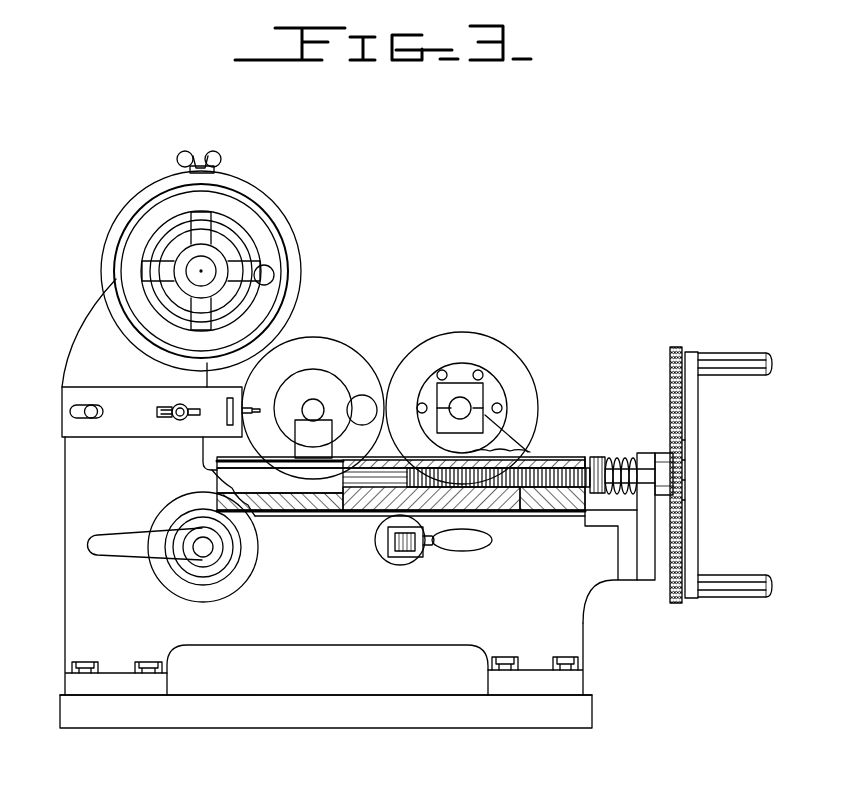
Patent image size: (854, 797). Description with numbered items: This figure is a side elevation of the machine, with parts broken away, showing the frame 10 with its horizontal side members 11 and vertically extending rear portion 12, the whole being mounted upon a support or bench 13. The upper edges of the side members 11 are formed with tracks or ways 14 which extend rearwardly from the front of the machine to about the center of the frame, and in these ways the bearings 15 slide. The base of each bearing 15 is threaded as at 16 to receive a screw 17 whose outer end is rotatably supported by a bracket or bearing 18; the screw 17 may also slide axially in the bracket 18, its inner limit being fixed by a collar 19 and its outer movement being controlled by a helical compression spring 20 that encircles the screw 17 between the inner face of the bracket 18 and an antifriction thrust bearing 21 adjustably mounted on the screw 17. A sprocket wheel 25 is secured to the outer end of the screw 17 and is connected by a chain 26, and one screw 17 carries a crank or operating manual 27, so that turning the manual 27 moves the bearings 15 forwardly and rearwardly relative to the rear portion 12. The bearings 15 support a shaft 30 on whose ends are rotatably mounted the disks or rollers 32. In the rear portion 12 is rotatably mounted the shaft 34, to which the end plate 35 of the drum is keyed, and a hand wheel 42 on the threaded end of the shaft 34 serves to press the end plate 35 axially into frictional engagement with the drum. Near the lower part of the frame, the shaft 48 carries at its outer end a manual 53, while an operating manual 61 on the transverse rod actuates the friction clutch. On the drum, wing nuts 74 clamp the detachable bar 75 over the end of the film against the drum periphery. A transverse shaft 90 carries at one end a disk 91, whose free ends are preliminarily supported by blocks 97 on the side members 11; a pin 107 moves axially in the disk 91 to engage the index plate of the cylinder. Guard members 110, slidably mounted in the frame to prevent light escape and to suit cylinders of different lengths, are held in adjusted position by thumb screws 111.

The frame 10 is at (592, 643).
The side members 11 is at (427, 640).
The rear portion 12 is at (77, 358).
The support or bench 13 is at (372, 729).
The tracks or ways 14 is at (327, 486).
The bearings 15 is at (505, 437).
The threaded base 16 is at (528, 455).
The screws 17 is at (523, 512).
The brackets or bearings 18 is at (643, 454).
The collar 19 is at (659, 453).
The helical compression spring 20 is at (620, 457).
The antifriction thrust bearing 21 is at (601, 456).
The sprocket wheel 25 is at (669, 373).
The chain 26 is at (683, 350).
The crank or operating manual 27 is at (696, 548).
The shaft 30 is at (459, 401).
The disks or rollers 32 is at (519, 369).
The shaft 34 is at (196, 280).
The end plate 35 is at (268, 209).
The hand wheel 42 is at (276, 270).
The shaft 48 is at (198, 554).
The manual 53 is at (129, 552).
The operating manual 61 is at (467, 552).
The wing nuts 74 is at (216, 160).
The detachable bar 75 is at (216, 172).
The shaft 90 is at (313, 399).
The disk 91 is at (334, 349).
The blocks 97 is at (304, 439).
The pin 107 is at (363, 395).
The guard members 110 is at (226, 414).
The thumb screws 111 is at (245, 406).